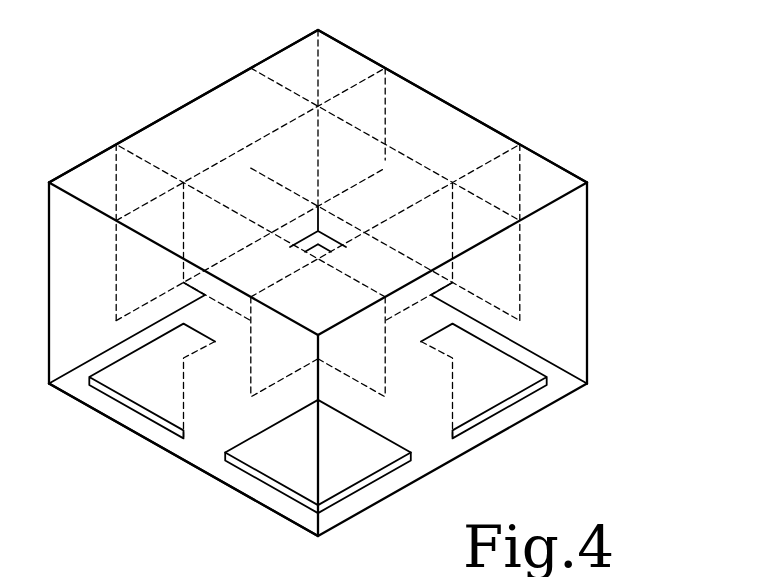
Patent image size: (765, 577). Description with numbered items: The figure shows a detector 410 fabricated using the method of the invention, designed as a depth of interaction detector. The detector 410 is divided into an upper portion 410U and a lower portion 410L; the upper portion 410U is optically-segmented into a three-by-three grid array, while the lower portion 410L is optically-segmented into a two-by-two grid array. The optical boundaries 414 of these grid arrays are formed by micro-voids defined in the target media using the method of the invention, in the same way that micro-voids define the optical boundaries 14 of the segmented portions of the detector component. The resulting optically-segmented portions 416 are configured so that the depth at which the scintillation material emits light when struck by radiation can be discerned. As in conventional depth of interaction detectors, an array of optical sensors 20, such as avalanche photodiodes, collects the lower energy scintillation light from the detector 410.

The detector 410 is at (510, 80).
The upper portion 410U is at (587, 283).
The lower portion 410L is at (587, 384).
The optical boundaries 414 is at (183, 378).
The optically-segmented portions 416 is at (175, 145).
The optical sensors 20 is at (248, 478).
The optical boundaries 14 is at (358, 82).